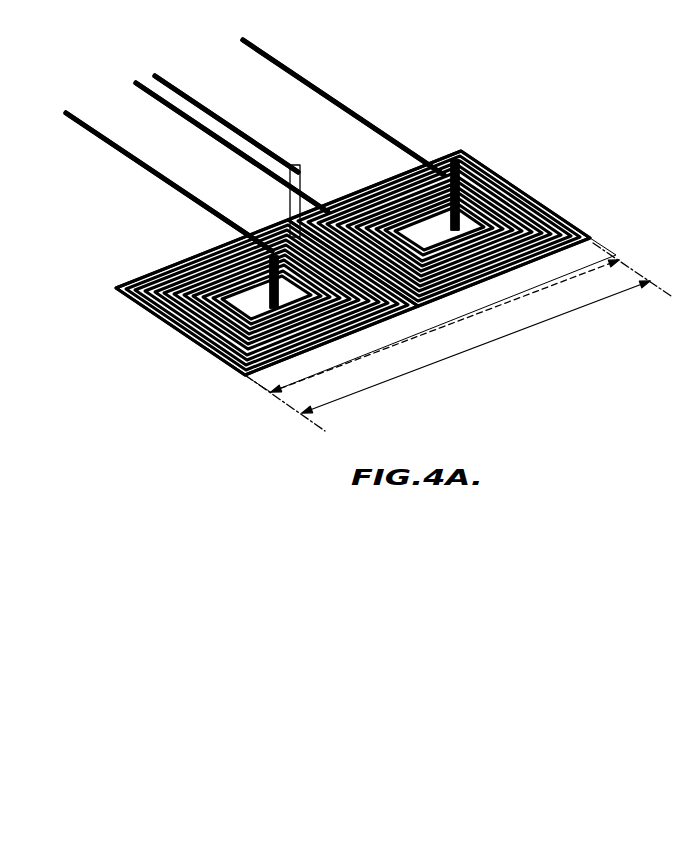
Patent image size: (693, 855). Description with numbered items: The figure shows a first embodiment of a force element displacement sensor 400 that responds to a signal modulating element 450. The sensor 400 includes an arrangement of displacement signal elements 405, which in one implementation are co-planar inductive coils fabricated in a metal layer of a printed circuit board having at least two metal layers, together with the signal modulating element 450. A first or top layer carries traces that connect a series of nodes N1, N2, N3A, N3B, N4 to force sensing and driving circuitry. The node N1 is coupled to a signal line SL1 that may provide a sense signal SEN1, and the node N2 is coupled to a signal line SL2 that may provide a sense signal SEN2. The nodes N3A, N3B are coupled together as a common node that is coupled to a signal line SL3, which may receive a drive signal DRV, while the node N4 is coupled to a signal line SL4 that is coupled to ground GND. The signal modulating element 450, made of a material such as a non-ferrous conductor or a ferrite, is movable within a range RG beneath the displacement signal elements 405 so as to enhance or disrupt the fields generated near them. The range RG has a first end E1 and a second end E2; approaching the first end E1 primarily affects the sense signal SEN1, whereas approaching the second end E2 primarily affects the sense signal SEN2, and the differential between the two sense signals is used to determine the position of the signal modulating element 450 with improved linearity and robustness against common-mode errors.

The force element displacement sensor 400 is at (468, 65).
The arrangement of displacement signal elements 405 is at (516, 177).
The signal modulating element 450 is at (403, 343).
The range RG is at (463, 345).
The first end E1 is at (284, 408).
The second end E2 is at (650, 279).
The node N1 is at (244, 233).
The node N2 is at (440, 157).
The node N3A is at (257, 258).
The node N3B is at (452, 172).
The node N4 is at (291, 158).
The sense signal SEN1 is at (80, 116).
The sense signal SEN2 is at (272, 57).
The drive signal DRV is at (133, 77).
The ground GND is at (177, 84).
The signal line SL1 is at (108, 138).
The signal line SL2 is at (324, 92).
The signal line SL3 is at (167, 102).
The signal line SL4 is at (211, 111).